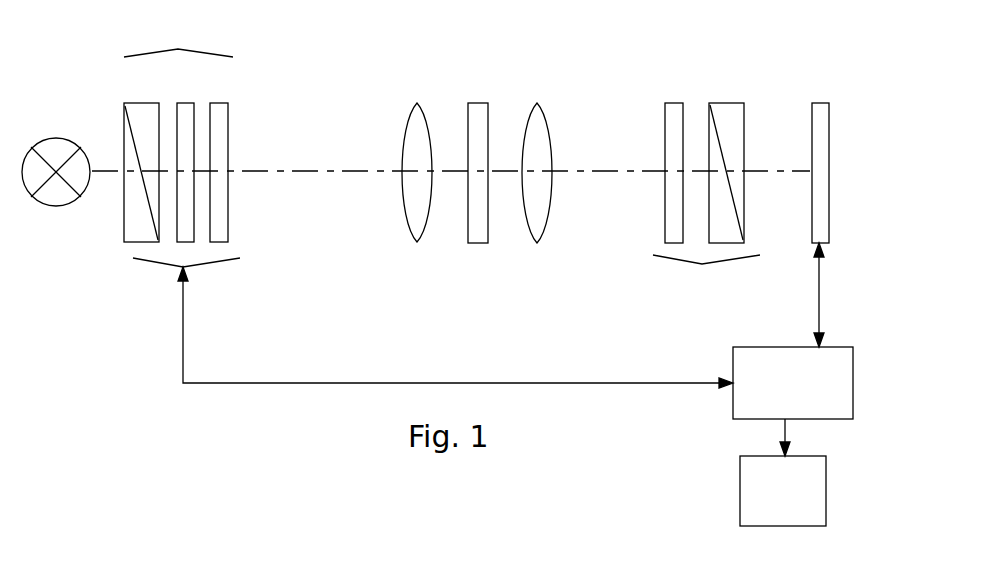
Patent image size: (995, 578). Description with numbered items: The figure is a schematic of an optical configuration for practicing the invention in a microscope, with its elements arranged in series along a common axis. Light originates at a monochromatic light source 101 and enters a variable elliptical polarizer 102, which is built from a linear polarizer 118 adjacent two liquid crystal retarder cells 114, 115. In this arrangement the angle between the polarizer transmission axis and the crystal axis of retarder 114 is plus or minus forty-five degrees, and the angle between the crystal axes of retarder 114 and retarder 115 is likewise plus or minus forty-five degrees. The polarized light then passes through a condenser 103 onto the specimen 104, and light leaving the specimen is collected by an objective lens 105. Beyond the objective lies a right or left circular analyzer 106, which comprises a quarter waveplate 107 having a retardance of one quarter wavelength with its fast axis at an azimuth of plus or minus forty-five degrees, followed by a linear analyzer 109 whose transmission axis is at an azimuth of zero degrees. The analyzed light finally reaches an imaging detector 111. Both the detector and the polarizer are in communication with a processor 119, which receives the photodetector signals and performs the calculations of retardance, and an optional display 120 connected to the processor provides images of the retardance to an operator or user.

The monochromatic light source 101 is at (56, 191).
The variable elliptical polarizer 102 is at (178, 33).
The condenser 103 is at (420, 194).
The specimen 104 is at (480, 194).
The objective lens 105 is at (540, 194).
The right or left circular analyzer 106 is at (706, 277).
The quarter waveplate 107 is at (676, 157).
The linear analyzer 109 is at (728, 157).
The imaging detector 111 is at (825, 157).
The liquid crystal retarder cell 114 is at (184, 157).
The liquid crystal retarder cell 115 is at (229, 157).
The linear polarizer 118 is at (139, 157).
The processor 119 is at (518, 331).
The display 120 is at (809, 472).